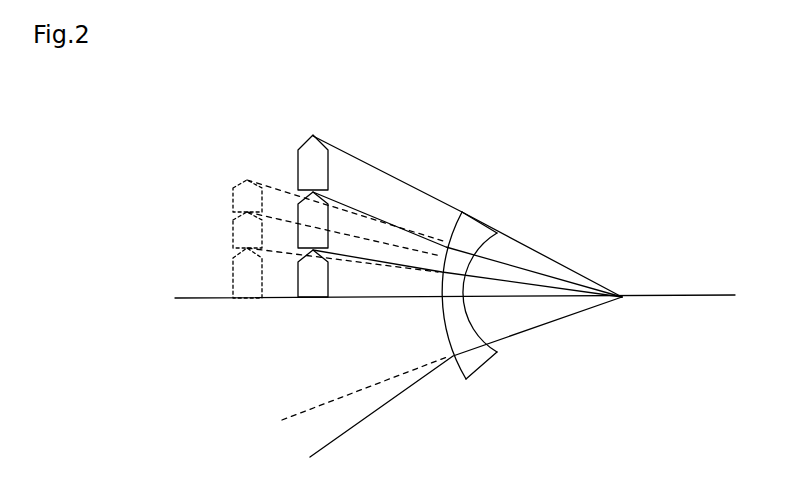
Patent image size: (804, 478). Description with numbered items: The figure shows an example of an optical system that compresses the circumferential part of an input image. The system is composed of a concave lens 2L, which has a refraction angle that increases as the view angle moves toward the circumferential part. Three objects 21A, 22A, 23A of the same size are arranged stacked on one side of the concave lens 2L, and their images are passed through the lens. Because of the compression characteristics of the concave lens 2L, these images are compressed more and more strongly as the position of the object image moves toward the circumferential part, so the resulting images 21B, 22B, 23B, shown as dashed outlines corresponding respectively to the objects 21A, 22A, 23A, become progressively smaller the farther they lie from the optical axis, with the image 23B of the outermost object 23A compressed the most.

The object 21A is at (332, 275).
The object 22A is at (332, 220).
The object 23A is at (333, 172).
The compressed image 21B is at (230, 277).
The compressed image 22B is at (230, 232).
The compressed image 23B is at (230, 195).
The concave lens 2L is at (483, 217).